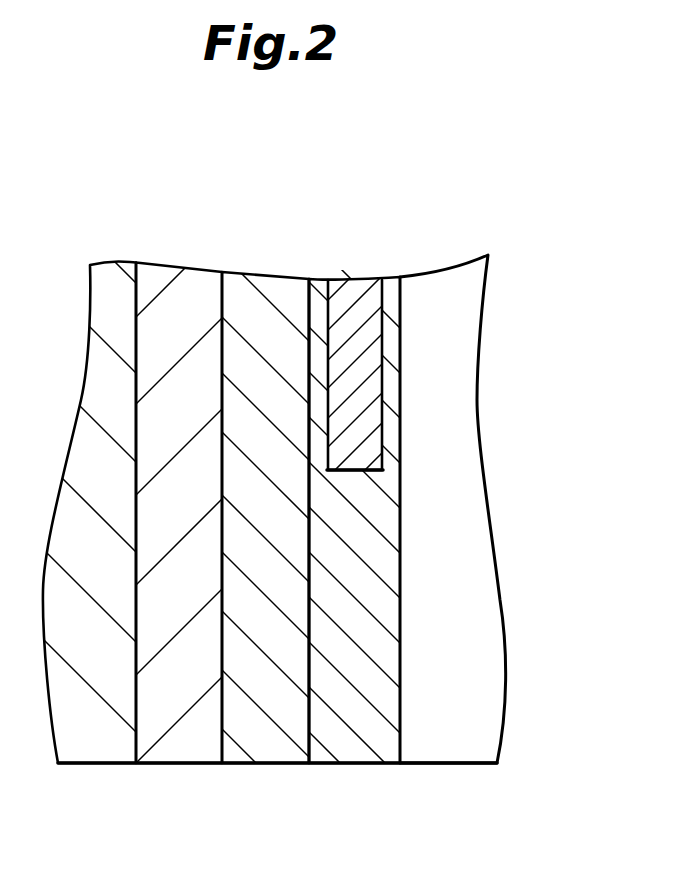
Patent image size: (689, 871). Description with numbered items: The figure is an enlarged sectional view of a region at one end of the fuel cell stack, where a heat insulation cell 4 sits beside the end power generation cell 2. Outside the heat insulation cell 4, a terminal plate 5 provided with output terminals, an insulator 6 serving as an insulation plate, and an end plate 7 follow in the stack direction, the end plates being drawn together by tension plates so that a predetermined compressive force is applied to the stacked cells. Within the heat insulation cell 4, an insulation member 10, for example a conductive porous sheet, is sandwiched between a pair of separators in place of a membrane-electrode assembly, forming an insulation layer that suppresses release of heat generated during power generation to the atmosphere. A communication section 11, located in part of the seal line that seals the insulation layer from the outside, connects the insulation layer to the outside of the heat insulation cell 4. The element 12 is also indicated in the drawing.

The power generation cell 2 is at (470, 750).
The heat insulation cell 4 is at (363, 752).
The terminal plate 5 is at (289, 752).
The insulator 6 is at (205, 750).
The end plate 7 is at (97, 750).
The insulation member 10 is at (350, 297).
The communication section 11 is at (400, 387).
The interface between first layer and second layer 12 is at (308, 313).